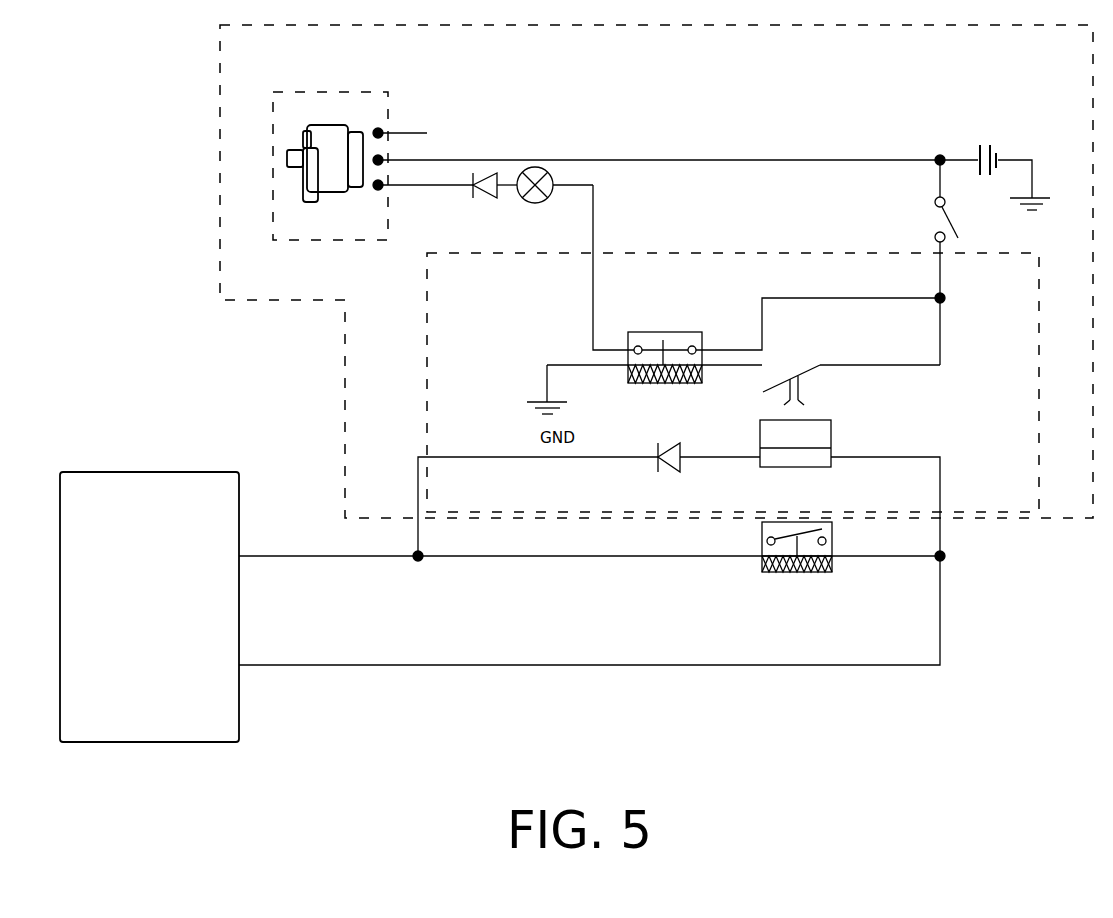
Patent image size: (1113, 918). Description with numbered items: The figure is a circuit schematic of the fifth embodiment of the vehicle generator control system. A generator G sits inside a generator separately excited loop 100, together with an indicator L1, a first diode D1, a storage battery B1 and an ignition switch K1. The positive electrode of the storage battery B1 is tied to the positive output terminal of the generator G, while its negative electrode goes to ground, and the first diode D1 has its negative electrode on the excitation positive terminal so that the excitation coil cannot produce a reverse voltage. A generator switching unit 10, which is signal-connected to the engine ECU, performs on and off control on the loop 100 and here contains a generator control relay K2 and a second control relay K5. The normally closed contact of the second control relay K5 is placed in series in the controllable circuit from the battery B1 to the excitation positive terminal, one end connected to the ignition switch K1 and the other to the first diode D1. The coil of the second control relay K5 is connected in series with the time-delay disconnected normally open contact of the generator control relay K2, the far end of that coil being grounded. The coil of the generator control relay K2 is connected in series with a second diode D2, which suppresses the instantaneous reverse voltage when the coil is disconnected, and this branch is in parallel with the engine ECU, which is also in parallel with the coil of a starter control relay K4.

The generator separately excited loop 100 is at (656, 271).
The generator switching unit 10 is at (733, 382).
The generator G is at (346, 166).
The first diode D1 is at (495, 200).
The indicator L1 is at (555, 199).
The second control relay K5 is at (665, 342).
The generator control relay K2 is at (850, 436).
The ignition switch K1 is at (931, 260).
The storage battery B1 is at (999, 181).
The second diode D2 is at (708, 476).
The starter control relay K4 is at (797, 564).
The engine ECU is at (149, 607).